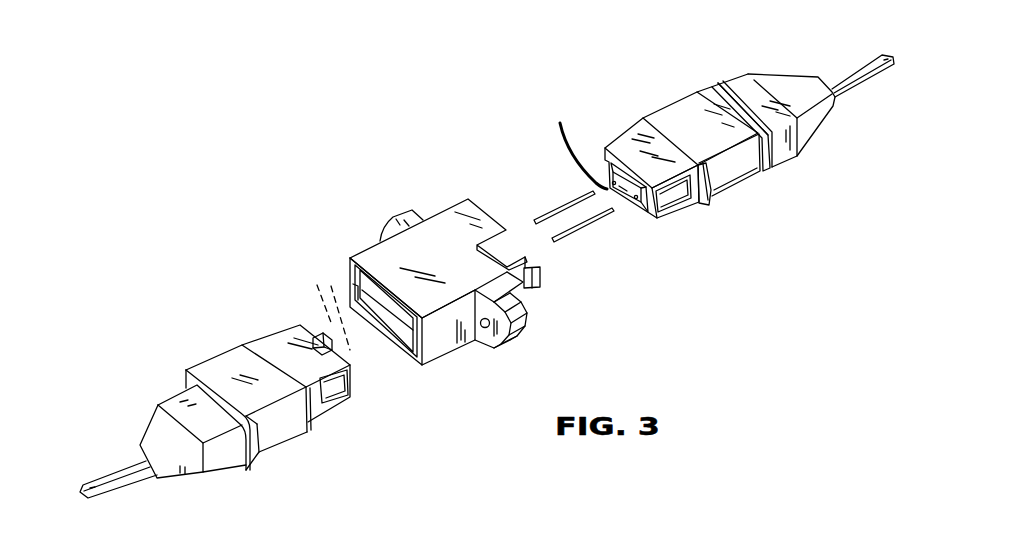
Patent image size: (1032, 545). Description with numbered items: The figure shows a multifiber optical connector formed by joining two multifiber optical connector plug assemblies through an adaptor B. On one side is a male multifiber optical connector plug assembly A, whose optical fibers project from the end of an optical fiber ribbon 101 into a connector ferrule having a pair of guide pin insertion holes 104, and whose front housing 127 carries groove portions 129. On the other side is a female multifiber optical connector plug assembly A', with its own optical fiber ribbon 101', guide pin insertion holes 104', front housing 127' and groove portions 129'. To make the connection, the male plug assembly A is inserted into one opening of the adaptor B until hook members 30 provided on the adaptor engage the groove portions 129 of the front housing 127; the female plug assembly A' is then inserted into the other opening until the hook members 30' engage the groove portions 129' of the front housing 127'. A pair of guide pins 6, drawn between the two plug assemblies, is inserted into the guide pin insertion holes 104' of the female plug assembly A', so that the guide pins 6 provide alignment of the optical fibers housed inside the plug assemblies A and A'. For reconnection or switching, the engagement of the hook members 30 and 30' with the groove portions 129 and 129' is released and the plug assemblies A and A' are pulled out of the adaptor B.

The male multifiber optical connector plug assembly A is at (731, 117).
The female multifiber optical connector plug assembly A' is at (225, 383).
The adaptor B is at (389, 206).
The guide pins 6 is at (577, 227).
The hook members 30 is at (559, 282).
The hook members 30' is at (406, 338).
The optical fiber ribbon 101 is at (861, 58).
The optical fiber ribbon 101' is at (109, 465).
The guide pin insertion holes 104 is at (574, 141).
The guide pin insertion holes 104' is at (320, 303).
The front housing 127 is at (657, 195).
The front housing 127' is at (287, 354).
The groove portions 129 is at (738, 196).
The groove portions 129' is at (355, 404).